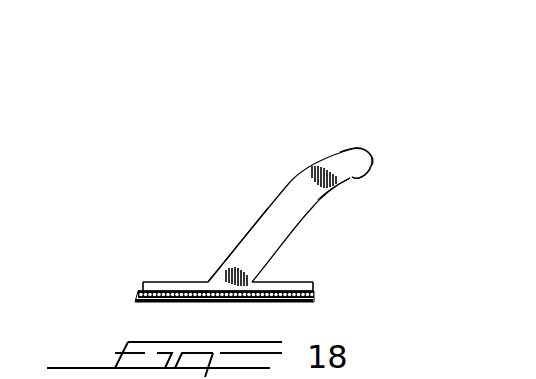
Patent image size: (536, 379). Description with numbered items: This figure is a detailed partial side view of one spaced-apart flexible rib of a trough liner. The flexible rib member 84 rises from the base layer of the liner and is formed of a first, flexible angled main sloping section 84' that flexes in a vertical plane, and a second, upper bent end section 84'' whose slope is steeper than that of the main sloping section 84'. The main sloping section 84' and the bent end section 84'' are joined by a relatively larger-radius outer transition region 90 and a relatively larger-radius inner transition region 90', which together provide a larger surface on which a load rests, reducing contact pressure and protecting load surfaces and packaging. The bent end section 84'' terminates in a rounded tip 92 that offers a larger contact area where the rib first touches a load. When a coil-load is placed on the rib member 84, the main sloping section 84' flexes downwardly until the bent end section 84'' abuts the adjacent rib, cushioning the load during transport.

The flexible rib member 84 is at (290, 170).
The main sloping section 84' is at (225, 232).
The bent end section 84'' is at (387, 185).
The outer transition region 90 is at (273, 141).
The inner transition region 90' is at (347, 240).
The rounded tip 92 is at (373, 156).